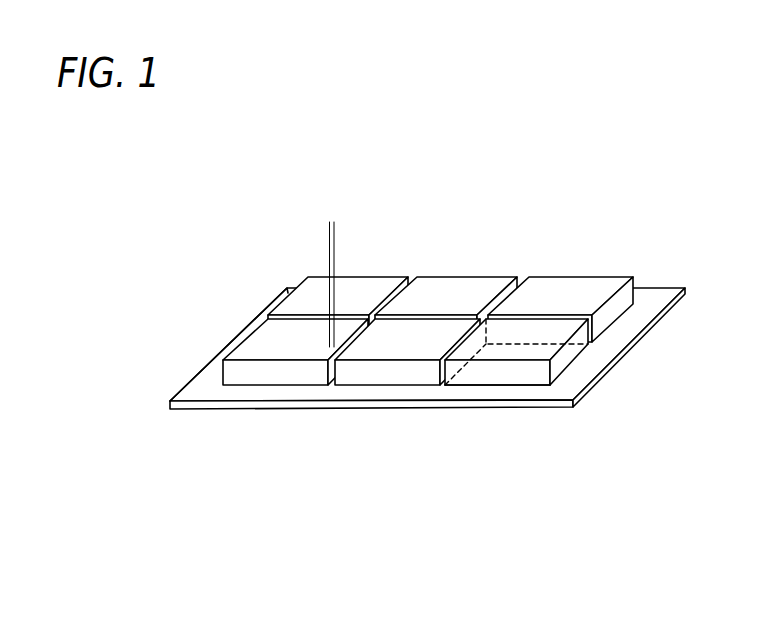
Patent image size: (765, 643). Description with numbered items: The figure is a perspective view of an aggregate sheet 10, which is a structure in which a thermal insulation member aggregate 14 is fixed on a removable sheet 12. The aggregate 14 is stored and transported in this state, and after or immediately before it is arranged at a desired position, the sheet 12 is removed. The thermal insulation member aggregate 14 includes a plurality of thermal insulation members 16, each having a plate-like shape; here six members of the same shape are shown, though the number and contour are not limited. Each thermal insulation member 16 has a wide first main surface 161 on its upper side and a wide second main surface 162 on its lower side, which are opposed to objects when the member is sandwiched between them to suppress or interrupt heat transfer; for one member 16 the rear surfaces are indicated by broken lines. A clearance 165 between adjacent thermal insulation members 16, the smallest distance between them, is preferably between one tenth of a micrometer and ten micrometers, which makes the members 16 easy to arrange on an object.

The aggregate sheet 10 is at (245, 158).
The sheet 12 is at (185, 407).
The thermal insulation member aggregate 14 is at (272, 284).
The thermal insulation member 16 is at (470, 290).
The first main surface 161 is at (530, 340).
The second main surface 162 is at (528, 375).
The clearance 165 is at (295, 238).